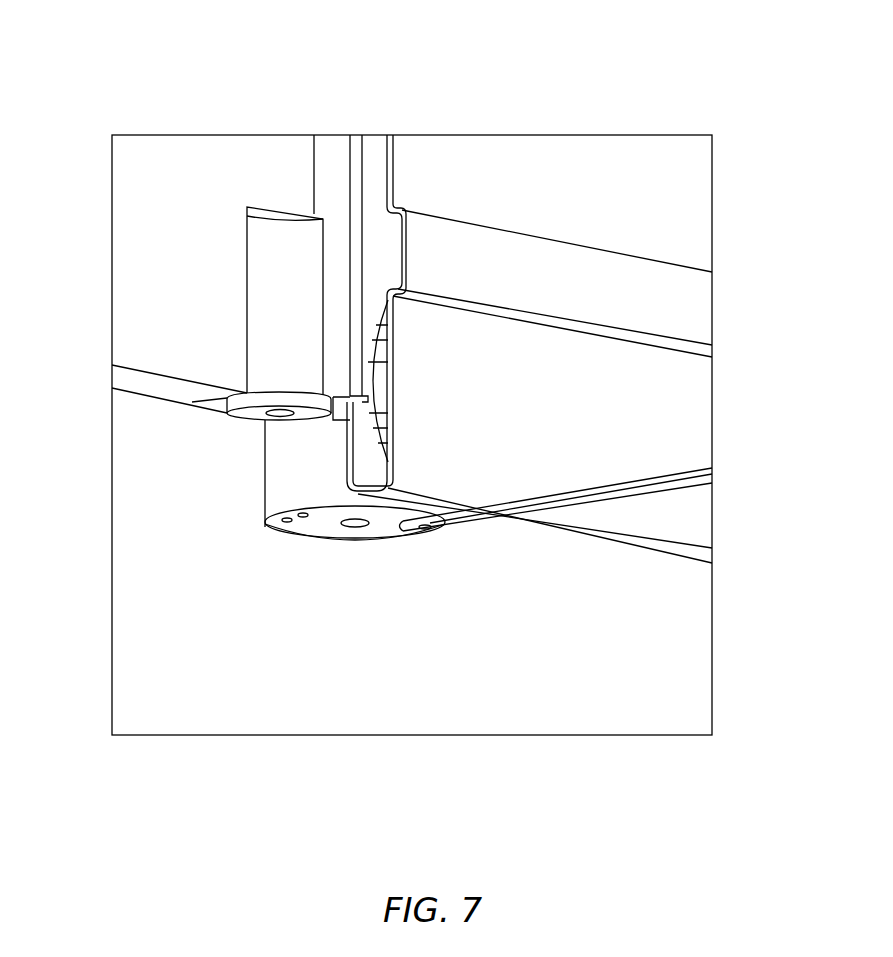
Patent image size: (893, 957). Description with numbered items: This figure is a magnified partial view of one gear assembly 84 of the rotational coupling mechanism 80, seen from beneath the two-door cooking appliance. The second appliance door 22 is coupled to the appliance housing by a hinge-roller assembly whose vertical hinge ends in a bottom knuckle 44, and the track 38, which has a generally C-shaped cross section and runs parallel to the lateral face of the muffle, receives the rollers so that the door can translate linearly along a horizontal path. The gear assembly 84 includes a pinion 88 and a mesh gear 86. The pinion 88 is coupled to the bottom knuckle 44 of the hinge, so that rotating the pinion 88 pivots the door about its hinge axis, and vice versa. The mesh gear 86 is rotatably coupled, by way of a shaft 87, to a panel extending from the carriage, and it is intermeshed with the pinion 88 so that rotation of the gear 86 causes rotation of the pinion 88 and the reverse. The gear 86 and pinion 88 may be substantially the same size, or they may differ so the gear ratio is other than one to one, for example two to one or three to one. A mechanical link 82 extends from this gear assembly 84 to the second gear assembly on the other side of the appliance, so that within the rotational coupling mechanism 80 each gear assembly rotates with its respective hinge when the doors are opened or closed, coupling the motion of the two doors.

The rotational coupling mechanism 80 is at (657, 66).
The second appliance door 22 is at (142, 214).
The track 38 is at (428, 178).
The bottom knuckle 44 is at (275, 283).
The pinion 88 is at (243, 423).
The mesh gear 86 is at (288, 462).
The gear assembly 84 is at (248, 561).
The shaft 87 is at (355, 530).
The mechanical link 82 is at (452, 528).